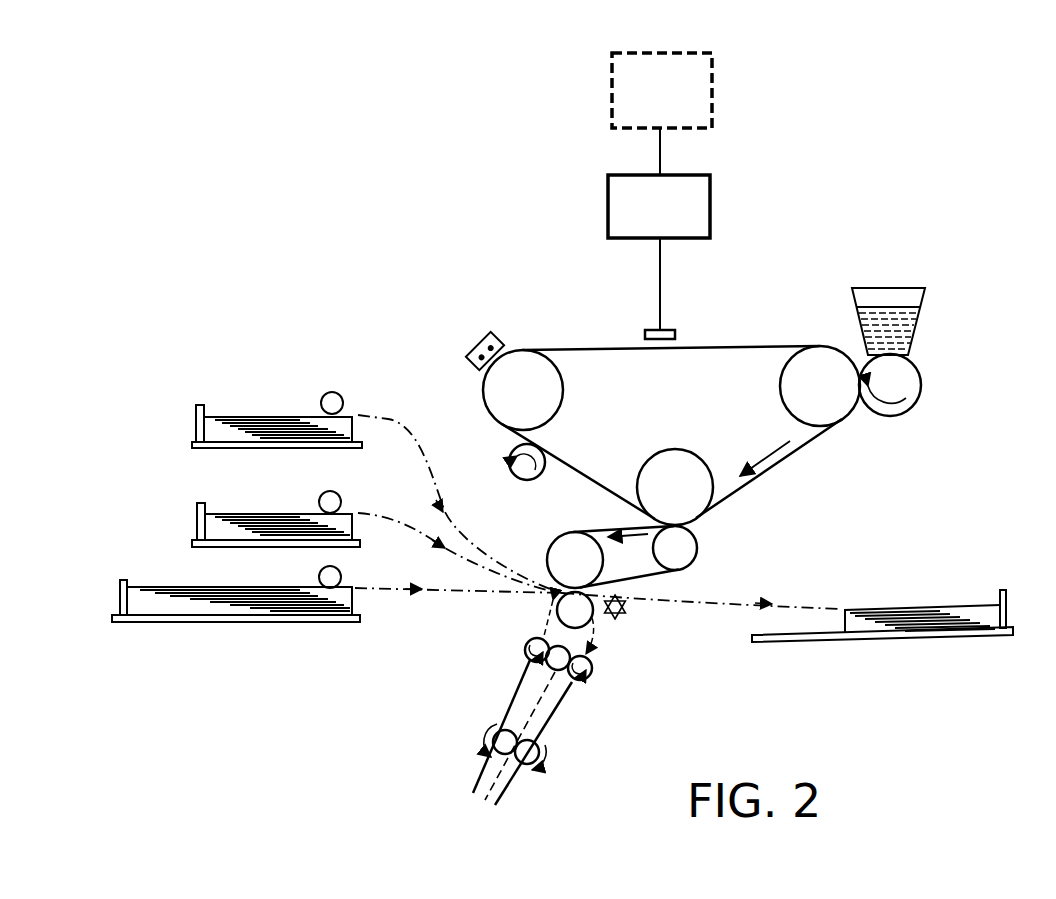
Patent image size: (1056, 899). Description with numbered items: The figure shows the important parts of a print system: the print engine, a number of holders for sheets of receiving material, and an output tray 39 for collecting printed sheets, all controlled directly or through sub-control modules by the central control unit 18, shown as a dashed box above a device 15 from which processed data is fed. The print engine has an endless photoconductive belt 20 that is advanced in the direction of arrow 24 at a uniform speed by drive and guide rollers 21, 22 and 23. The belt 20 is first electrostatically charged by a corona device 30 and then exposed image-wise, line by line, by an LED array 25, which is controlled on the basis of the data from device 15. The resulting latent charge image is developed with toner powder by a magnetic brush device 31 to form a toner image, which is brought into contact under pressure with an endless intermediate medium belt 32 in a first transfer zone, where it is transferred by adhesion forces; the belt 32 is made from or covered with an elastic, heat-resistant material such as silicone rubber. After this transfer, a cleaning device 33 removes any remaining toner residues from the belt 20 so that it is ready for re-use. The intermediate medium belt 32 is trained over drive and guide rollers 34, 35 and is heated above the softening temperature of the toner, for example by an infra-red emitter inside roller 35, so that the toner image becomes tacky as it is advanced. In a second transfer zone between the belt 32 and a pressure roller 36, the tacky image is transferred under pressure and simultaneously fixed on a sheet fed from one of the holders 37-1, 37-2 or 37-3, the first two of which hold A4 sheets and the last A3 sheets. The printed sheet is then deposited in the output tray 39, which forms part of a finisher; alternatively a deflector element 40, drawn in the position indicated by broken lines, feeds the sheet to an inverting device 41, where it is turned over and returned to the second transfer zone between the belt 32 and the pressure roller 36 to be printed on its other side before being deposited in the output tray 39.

The central control unit 18 is at (657, 52).
The device 15 is at (712, 195).
The LED array 25 is at (673, 330).
The photoconductive belt 20 is at (618, 346).
The drive and guide roller 23 is at (562, 387).
The drive and guide roller 21 is at (794, 382).
The drive and guide roller 22 is at (675, 455).
The arrow 24 is at (765, 458).
The magnetic brush device 31 is at (912, 378).
The corona device 30 is at (479, 340).
The cleaning device 33 is at (509, 455).
The intermediate medium belt 32 is at (600, 530).
The drive and guide roller 35 is at (548, 553).
The drive and guide roller 34 is at (698, 546).
The pressure roller 36 is at (570, 614).
The deflector element 40 is at (624, 612).
The inverting device 41 is at (558, 720).
The holder 37-1 is at (254, 404).
The holder 37-2 is at (181, 511).
The holder 37-3 is at (164, 582).
The output tray 39 is at (926, 600).